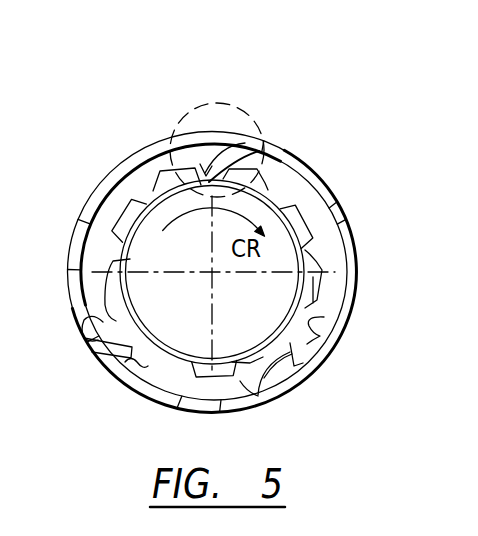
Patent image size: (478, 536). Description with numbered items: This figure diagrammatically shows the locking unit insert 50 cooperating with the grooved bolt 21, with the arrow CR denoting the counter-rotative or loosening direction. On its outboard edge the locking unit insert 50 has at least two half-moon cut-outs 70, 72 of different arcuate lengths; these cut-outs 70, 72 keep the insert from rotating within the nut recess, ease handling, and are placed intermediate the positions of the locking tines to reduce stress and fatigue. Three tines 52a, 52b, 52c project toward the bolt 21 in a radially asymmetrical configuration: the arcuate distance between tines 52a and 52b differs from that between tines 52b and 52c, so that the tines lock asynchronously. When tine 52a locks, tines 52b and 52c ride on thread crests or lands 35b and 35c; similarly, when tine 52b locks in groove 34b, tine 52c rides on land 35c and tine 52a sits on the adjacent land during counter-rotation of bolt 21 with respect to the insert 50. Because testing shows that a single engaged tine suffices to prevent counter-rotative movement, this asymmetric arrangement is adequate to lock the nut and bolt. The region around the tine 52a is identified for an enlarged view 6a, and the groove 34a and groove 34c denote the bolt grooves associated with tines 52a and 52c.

The locking unit insert 50 is at (370, 287).
The cut-out 70 is at (73, 243).
The cut-out 72 is at (197, 413).
The bolt 21 is at (306, 256).
The detail region shown in Fig. 6a is at (260, 126).
The tine 52a is at (208, 176).
The cam ramp 34a is at (205, 175).
The tine 52b is at (294, 360).
The thread crest or land 35b is at (258, 396).
The groove 34b is at (321, 336).
The tine 52c is at (84, 320).
The cam ramp 34c is at (131, 352).
The thread crest or land 35c is at (124, 360).